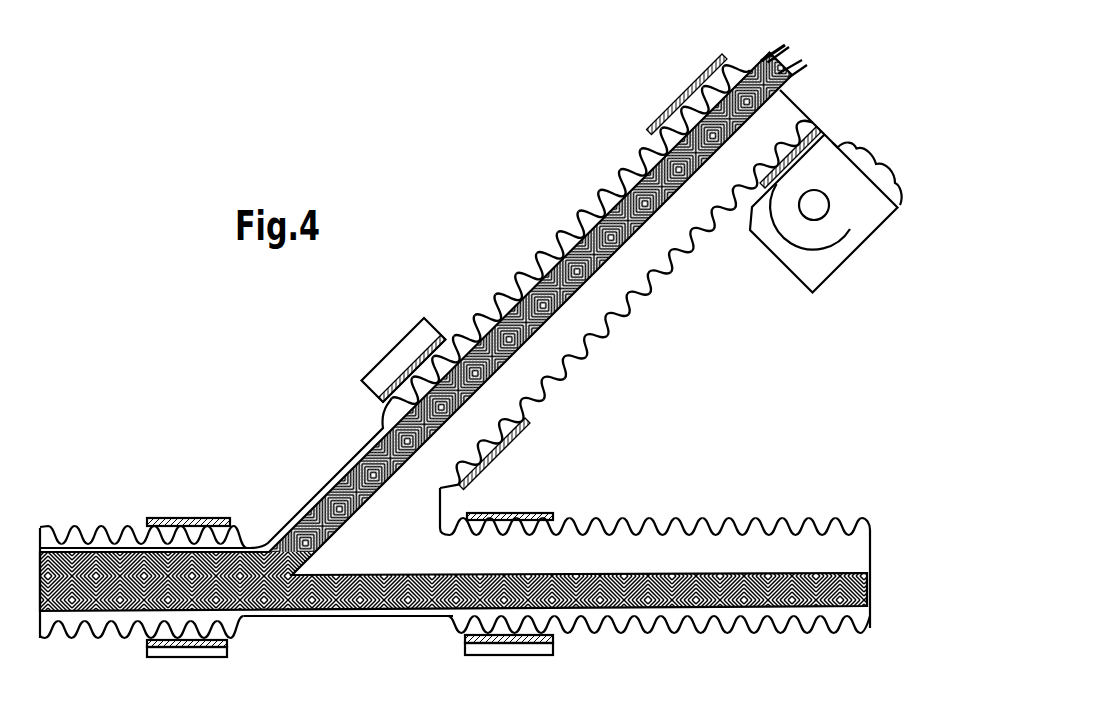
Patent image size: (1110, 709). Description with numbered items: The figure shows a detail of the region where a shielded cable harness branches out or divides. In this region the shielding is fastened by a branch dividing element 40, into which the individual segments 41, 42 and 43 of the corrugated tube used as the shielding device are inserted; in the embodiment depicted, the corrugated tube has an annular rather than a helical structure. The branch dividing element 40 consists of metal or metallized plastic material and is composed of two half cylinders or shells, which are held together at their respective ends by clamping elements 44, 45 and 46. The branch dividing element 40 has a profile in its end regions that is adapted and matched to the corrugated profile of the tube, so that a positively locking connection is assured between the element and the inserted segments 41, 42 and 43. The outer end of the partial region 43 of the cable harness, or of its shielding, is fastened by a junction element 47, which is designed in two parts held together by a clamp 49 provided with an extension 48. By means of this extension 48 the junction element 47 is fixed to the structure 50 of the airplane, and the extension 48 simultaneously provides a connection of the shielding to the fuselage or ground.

The branch dividing element 40 is at (318, 490).
The corrugated tube segment 41 is at (100, 526).
The corrugated tube segment 42 is at (665, 519).
The corrugated tube segment 43 is at (568, 220).
The clamping element 44 is at (190, 518).
The clamping element 45 is at (532, 512).
The clamping element 46 is at (400, 352).
The junction element 47 is at (735, 53).
The extension 48 is at (847, 223).
The clamp 49 is at (690, 86).
The structure of the airplane 50 is at (790, 258).